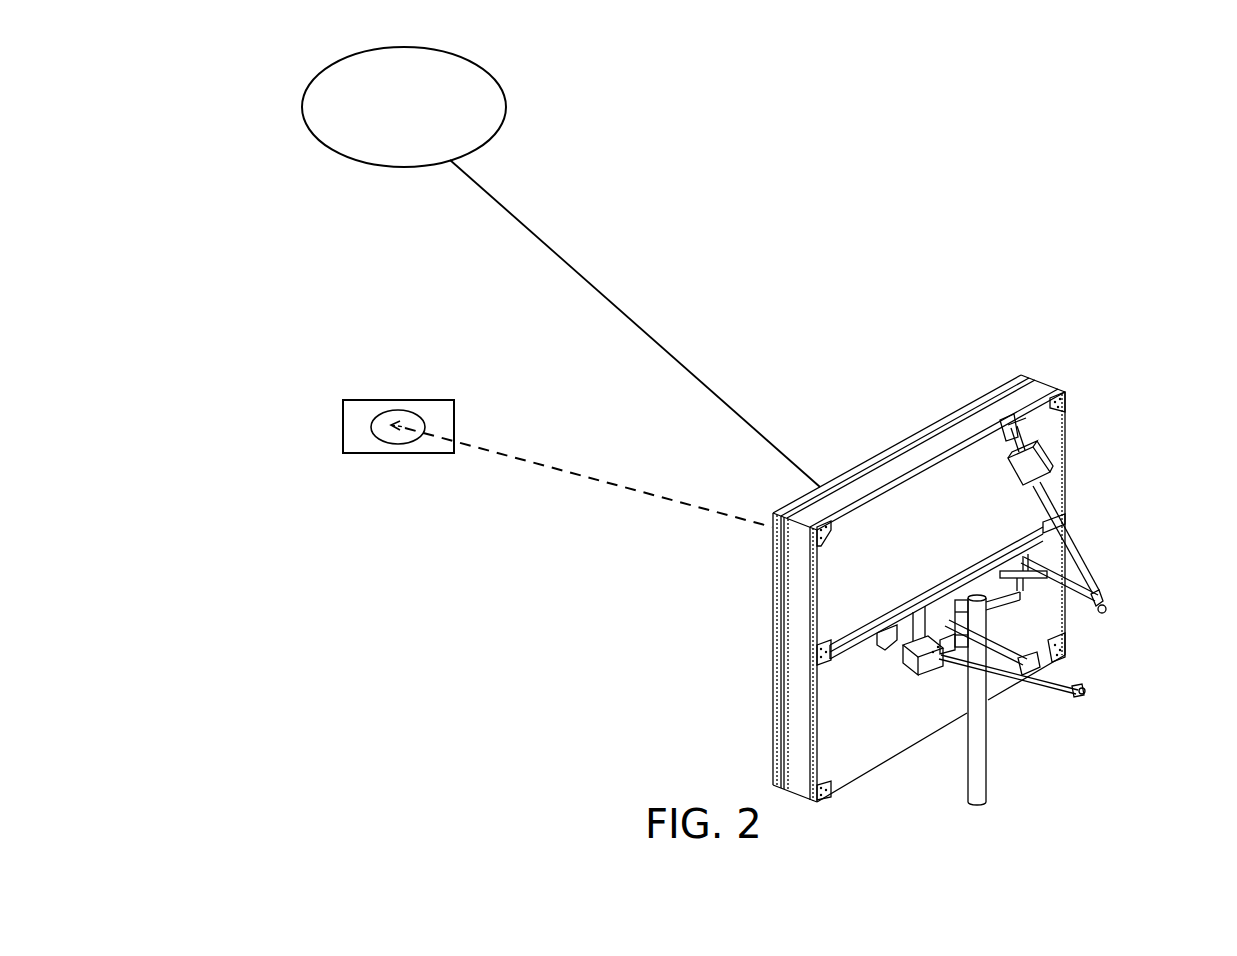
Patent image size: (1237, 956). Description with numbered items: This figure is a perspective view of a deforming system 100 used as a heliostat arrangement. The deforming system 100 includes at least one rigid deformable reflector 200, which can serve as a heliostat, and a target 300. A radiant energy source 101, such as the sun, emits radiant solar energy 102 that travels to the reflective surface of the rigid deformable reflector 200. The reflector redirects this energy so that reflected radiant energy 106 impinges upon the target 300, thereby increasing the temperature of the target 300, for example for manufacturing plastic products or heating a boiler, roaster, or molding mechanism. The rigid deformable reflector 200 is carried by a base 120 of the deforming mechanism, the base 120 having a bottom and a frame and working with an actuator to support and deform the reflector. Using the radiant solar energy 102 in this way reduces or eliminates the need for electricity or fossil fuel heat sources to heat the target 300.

The deforming system 100 is at (1000, 565).
The radiant energy source 101 is at (338, 113).
The radiant solar energy 102 is at (627, 314).
The reflected radiant energy 106 is at (563, 479).
The base 120 is at (1033, 395).
The rigid deformable reflector 200 is at (948, 565).
The target 300 is at (373, 423).